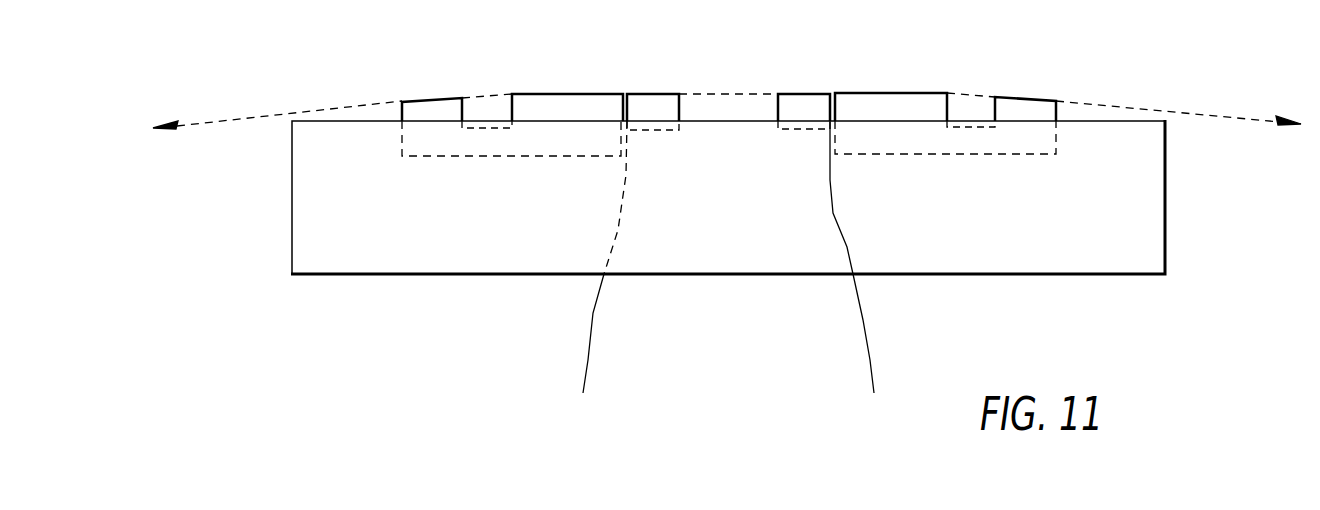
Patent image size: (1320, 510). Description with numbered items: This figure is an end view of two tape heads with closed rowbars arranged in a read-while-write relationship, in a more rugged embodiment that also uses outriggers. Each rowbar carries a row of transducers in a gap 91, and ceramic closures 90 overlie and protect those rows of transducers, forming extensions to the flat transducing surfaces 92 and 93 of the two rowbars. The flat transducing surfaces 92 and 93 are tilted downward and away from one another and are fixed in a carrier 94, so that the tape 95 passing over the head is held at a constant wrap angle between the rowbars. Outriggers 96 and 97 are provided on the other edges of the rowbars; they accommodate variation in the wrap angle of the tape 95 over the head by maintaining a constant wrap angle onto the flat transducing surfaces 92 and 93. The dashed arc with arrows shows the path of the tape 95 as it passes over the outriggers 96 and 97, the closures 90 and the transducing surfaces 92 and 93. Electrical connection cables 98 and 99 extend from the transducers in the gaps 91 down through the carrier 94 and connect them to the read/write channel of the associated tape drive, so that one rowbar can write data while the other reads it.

The ceramic closures 90 is at (660, 132).
The gaps 91 is at (625, 93).
The flat transducing surface 92 is at (560, 93).
The flat transducing surface 93 is at (888, 92).
The carrier 94 is at (1166, 243).
The tape 95 is at (1118, 102).
The outrigger 96 is at (428, 102).
The outrigger 97 is at (1025, 95).
The electrical connection cable 98 is at (587, 358).
The electrical connection cable 99 is at (869, 358).